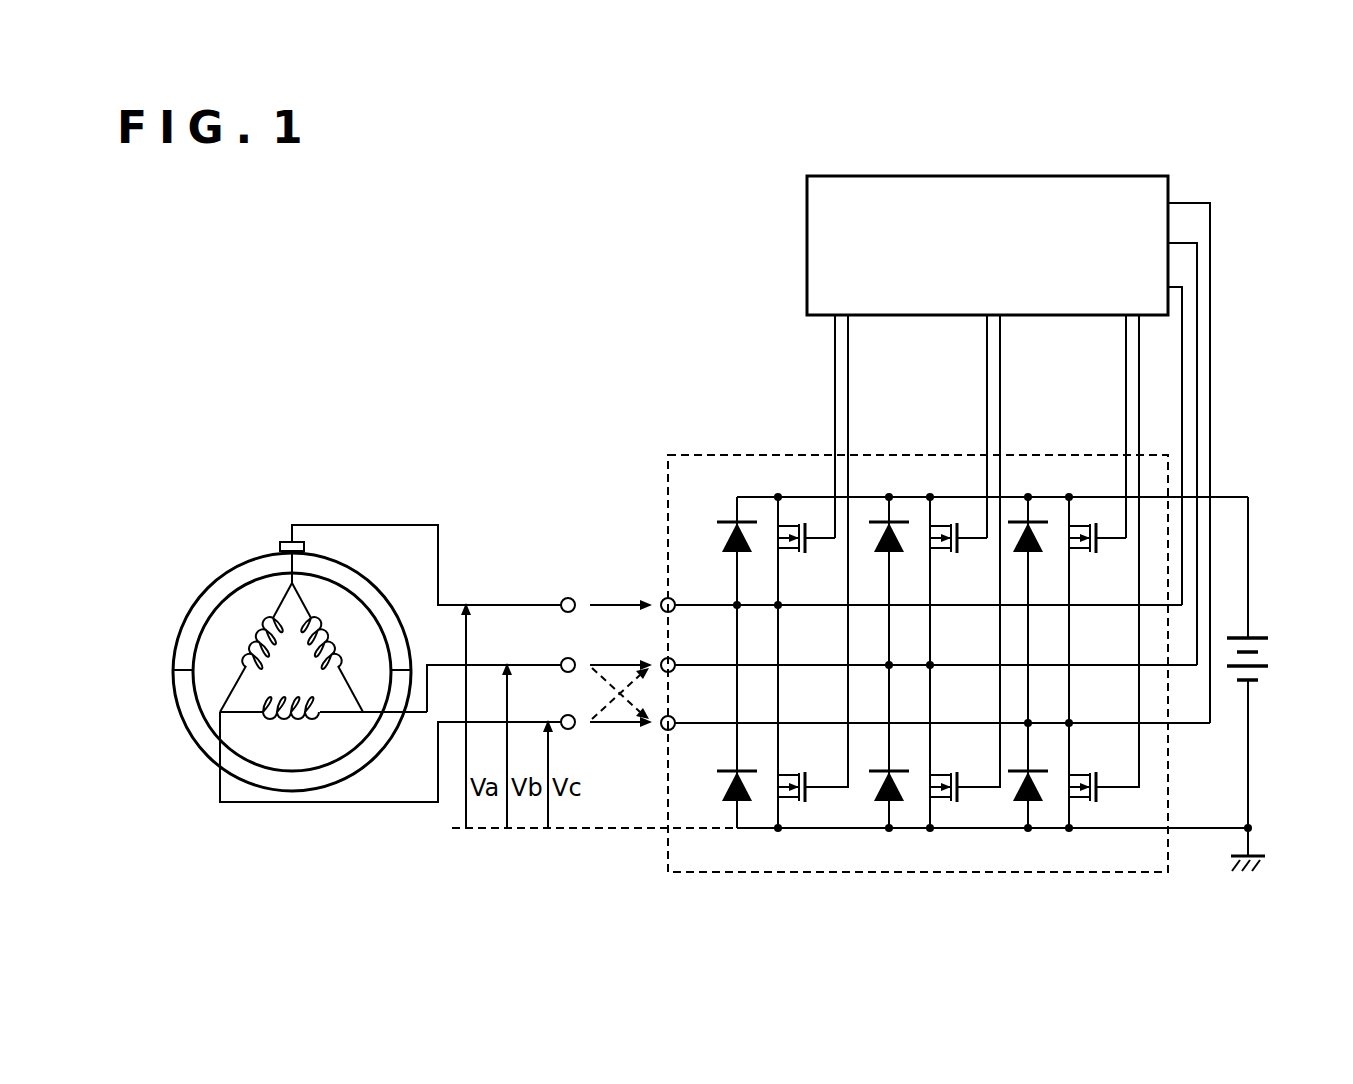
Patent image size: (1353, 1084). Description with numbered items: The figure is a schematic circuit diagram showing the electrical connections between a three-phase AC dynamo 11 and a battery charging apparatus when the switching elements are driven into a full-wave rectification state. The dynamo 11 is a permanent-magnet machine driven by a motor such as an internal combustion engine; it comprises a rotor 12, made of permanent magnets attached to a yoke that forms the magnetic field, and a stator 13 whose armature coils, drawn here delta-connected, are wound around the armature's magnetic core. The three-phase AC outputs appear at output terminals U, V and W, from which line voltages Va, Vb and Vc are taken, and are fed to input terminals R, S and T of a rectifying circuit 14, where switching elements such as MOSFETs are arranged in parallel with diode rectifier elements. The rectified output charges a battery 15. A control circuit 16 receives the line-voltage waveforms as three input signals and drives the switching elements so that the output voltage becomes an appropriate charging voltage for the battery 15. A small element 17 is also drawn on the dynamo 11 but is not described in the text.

The three-phase AC dynamo 11 is at (199, 486).
The rotor 12 is at (214, 600).
The stator 13 is at (284, 672).
The rectifying circuit 14 is at (690, 454).
The battery 15 is at (1265, 636).
The control circuit 16 is at (1130, 176).
The position sensor 17 is at (279, 544).